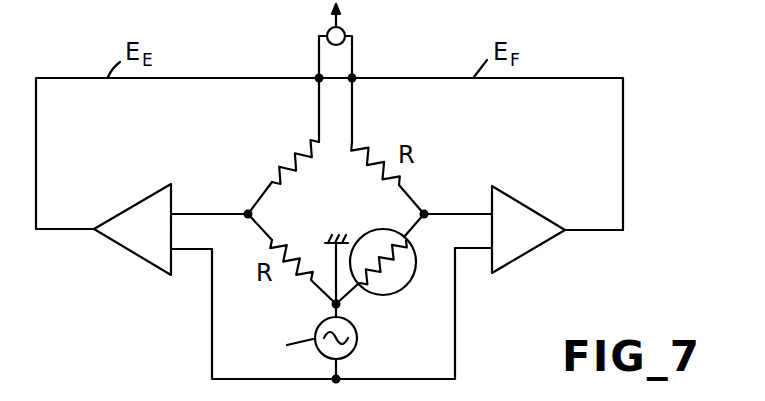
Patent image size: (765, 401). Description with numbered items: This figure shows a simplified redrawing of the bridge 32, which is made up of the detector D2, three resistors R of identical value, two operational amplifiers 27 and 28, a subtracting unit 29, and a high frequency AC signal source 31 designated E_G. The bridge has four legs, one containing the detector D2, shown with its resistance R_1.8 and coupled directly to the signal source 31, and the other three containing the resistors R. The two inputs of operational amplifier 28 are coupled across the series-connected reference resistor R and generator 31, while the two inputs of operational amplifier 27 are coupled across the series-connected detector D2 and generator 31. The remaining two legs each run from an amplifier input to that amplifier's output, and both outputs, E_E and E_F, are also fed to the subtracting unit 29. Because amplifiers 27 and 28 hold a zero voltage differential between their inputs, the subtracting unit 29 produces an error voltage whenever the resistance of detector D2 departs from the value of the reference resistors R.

The operational amplifier 27 is at (530, 256).
The operational amplifier 28 is at (140, 258).
The subtracting unit 29 is at (324, 31).
The high frequency AC signal source 31 is at (360, 347).
The bridge 32 is at (291, 206).
The detector D2 is at (399, 292).